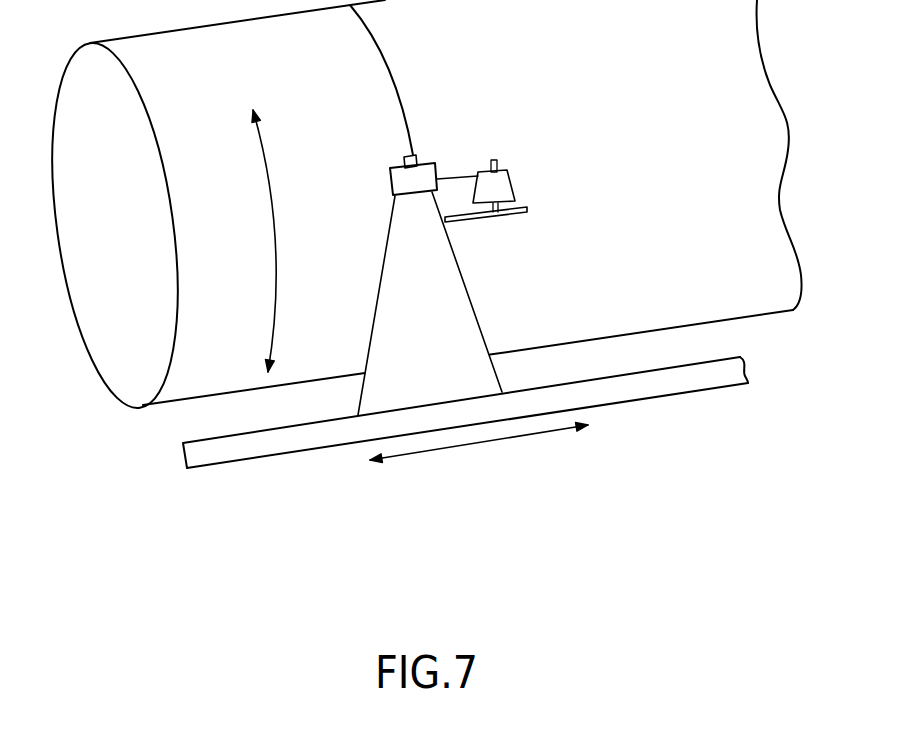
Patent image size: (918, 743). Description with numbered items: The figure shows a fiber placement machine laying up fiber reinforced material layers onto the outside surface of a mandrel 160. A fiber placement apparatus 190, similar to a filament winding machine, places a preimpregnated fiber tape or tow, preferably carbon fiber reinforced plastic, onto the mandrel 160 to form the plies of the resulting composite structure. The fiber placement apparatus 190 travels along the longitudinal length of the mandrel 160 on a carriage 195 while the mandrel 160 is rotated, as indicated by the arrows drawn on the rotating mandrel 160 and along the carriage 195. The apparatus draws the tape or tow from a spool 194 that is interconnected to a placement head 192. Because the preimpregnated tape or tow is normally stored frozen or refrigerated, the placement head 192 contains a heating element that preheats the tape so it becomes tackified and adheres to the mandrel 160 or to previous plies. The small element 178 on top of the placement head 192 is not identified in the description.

The mandrel 160 is at (97, 376).
The light source 178 is at (404, 160).
The fiber placement apparatus 190 is at (457, 385).
The placement head 192 is at (432, 170).
The spool 194 is at (517, 193).
The carriage 195 is at (280, 457).